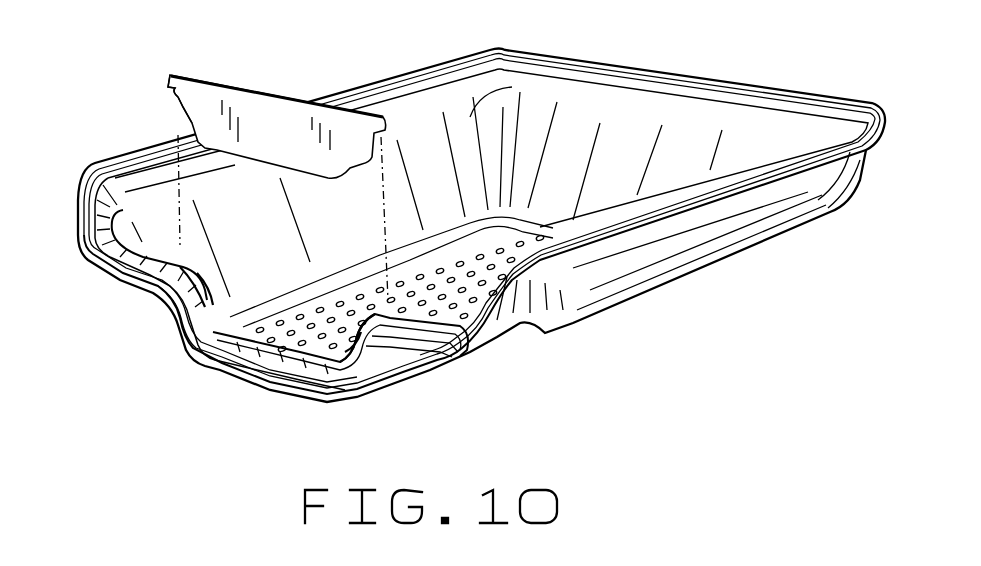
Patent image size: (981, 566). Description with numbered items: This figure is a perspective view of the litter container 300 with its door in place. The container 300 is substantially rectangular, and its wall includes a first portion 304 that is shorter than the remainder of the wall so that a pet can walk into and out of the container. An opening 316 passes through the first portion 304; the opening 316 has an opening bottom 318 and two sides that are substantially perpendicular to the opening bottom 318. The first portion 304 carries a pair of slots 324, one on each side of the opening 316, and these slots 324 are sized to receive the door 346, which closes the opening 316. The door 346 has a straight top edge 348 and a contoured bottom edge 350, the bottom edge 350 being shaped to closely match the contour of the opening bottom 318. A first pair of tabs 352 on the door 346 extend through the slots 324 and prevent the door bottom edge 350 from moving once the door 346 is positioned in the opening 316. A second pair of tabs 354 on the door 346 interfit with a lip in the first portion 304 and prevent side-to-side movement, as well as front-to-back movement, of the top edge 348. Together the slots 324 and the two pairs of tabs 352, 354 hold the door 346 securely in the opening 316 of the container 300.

The litter container 300 is at (87, 154).
The first portion 304 is at (133, 261).
The opening 316 is at (225, 343).
The opening bottom 318 is at (262, 352).
The slots 324 is at (230, 333).
The door 346 is at (293, 151).
The top edge 348 is at (263, 85).
The bottom edge 350 is at (307, 175).
The first pair of tabs 352 is at (178, 111).
The second pair of tabs 354 is at (166, 87).